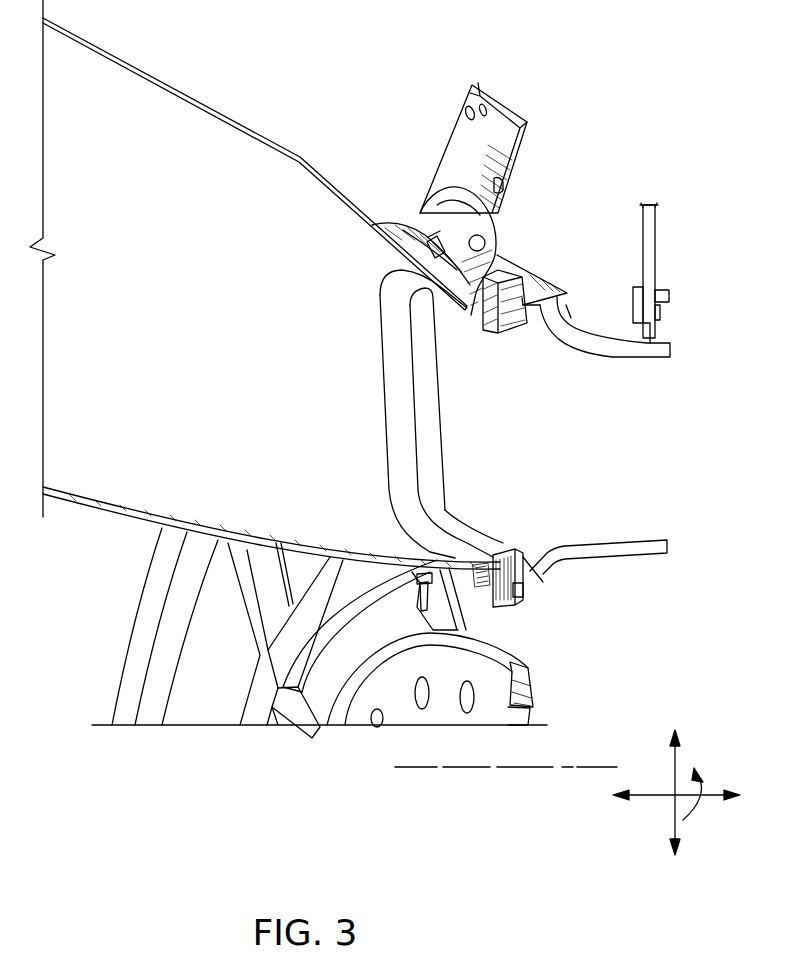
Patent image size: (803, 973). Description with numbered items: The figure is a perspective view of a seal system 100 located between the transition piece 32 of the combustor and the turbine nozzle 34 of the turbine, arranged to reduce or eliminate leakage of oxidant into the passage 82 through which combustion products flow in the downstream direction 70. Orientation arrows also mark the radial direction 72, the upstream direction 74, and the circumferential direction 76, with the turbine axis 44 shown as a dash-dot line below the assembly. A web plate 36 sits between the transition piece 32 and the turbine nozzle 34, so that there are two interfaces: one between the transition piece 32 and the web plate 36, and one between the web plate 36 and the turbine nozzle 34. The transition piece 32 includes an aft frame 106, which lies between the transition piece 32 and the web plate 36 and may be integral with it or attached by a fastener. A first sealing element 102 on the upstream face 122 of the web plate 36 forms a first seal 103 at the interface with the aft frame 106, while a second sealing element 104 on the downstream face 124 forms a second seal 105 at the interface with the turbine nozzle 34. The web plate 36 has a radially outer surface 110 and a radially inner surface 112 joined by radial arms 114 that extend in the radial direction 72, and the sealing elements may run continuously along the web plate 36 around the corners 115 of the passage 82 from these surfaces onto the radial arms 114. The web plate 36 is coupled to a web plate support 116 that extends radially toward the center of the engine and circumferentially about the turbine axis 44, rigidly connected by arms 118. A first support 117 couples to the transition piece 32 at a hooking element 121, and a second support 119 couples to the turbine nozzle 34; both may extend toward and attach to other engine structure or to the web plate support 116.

The transition piece 32 is at (163, 78).
The turbine nozzle 34 is at (612, 355).
The web plate 36 is at (528, 592).
The turbine axis 44 is at (536, 772).
The downstream direction 70 is at (712, 800).
The radial direction 72 is at (670, 768).
The upstream direction 74 is at (645, 798).
The circumferential direction 76 is at (690, 822).
The passage 82 is at (553, 448).
The seal system 100 is at (503, 610).
The first sealing element 102 is at (502, 330).
The first seal 103 is at (530, 278).
The second sealing element 104 is at (530, 594).
The second seal 105 is at (555, 280).
The aft frame 106 is at (397, 223).
The radially outer surface 110 is at (520, 340).
The radially inner surface 112 is at (510, 547).
The radial arms 114 is at (440, 468).
The corners 115 is at (412, 314).
The web plate support 116 is at (492, 712).
The first support 117 is at (450, 132).
The arms 118 is at (372, 700).
The second support 119 is at (657, 238).
The hooking element 121 is at (497, 234).
The upstream face 122 is at (505, 253).
The downstream face 124 is at (570, 313).